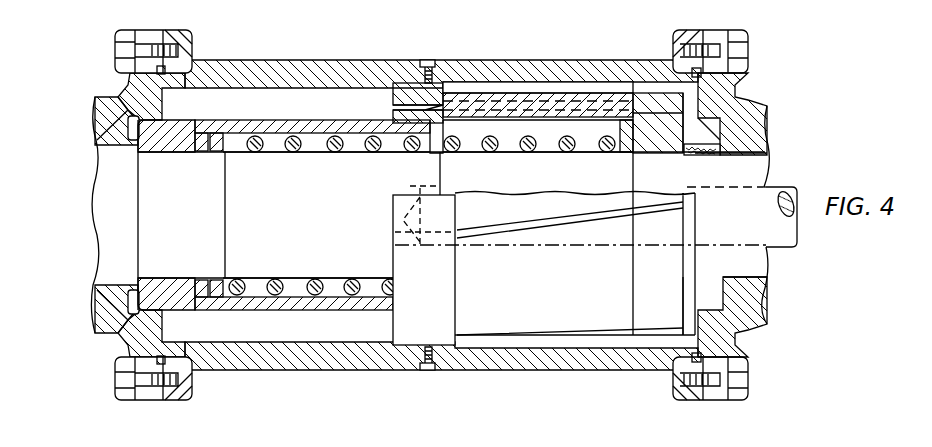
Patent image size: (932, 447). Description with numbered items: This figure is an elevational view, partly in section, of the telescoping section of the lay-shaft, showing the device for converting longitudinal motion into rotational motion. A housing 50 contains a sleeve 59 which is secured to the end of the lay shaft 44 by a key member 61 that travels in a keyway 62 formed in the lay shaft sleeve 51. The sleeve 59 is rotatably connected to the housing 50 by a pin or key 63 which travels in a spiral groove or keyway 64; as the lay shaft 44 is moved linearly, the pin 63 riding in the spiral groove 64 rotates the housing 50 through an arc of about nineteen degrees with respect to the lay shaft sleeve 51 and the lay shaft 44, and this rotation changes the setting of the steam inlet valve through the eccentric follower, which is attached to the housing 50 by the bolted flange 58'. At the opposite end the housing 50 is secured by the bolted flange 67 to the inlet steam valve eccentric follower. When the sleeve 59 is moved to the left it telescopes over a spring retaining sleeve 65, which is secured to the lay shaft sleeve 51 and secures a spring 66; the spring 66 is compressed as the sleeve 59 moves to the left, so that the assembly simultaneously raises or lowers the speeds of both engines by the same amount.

The housing 50 is at (347, 61).
The bolted flange 58' is at (734, 213).
The lay shaft 44 is at (642, 192).
The lay shaft sleeve 51 is at (763, 266).
The spring retaining sleeve 65 is at (186, 130).
The bolted flange 67 is at (118, 328).
The spring 66 is at (268, 130).
The pin or key 63 is at (393, 96).
The sleeve 59 is at (522, 108).
The spiral groove or keyway 64 is at (623, 102).
The key member 61 is at (637, 126).
The keyway 62 is at (553, 174).